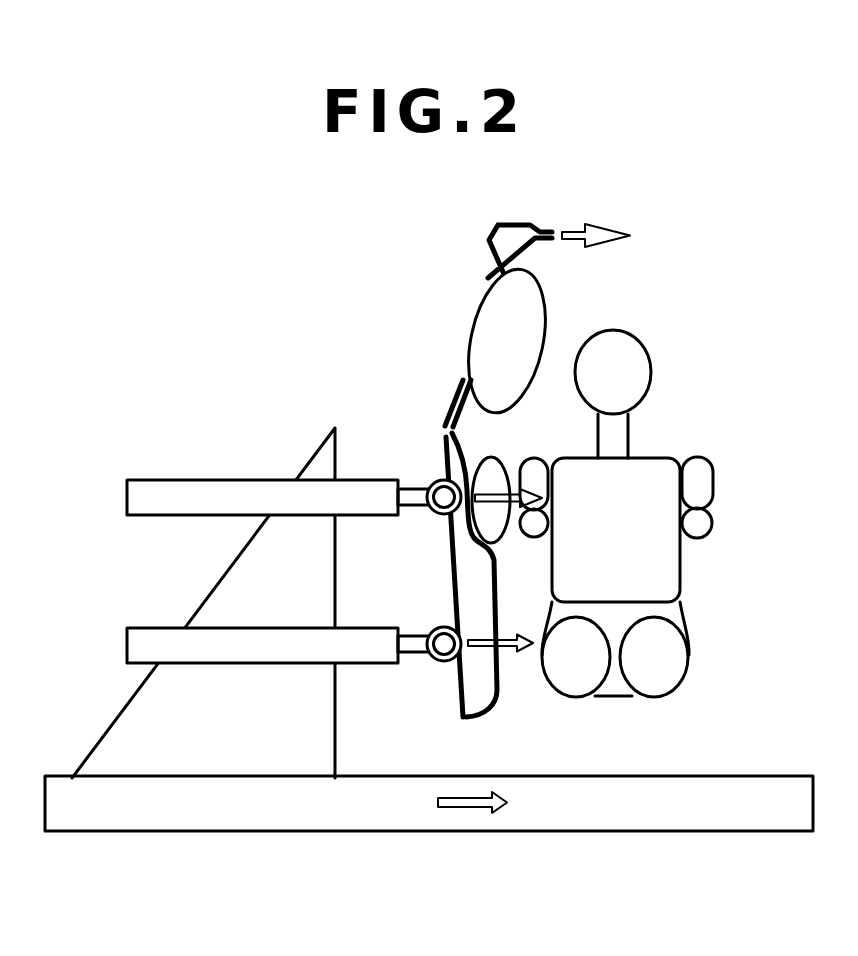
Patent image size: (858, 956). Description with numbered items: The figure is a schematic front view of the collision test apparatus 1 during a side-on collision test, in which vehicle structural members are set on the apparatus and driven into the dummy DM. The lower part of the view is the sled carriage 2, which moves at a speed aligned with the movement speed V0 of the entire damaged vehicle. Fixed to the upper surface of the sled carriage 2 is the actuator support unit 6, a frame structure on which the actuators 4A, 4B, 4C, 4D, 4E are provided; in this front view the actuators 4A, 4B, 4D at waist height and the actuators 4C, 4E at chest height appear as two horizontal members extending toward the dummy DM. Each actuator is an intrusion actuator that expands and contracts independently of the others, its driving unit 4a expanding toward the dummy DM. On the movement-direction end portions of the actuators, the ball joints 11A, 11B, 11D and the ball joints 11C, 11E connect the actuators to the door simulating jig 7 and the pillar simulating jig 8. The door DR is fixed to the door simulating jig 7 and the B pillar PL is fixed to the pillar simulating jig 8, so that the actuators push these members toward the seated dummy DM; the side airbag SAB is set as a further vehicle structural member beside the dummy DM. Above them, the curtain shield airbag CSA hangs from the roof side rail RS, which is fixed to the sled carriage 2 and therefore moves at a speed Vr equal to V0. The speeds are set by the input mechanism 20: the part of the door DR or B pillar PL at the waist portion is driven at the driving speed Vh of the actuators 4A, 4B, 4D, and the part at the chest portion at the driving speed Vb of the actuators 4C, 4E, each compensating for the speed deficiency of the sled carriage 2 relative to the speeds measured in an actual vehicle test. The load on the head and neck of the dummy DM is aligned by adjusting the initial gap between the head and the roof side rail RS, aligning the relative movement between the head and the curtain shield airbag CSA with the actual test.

The collision test apparatus 1 is at (238, 318).
The sled carriage 2 is at (720, 817).
The actuator 4A is at (262, 687).
The actuator 4B is at (262, 687).
The actuator 4D is at (220, 648).
The actuator 4C is at (262, 454).
The actuator 4E is at (168, 497).
The driving unit 4a is at (425, 506).
The actuator support unit 6 is at (106, 731).
The door simulating jig 7 is at (407, 574).
The pillar simulating jig 8 is at (445, 470).
The ball joint 11A is at (425, 699).
The ball joint 11B is at (425, 699).
The ball joint 11D is at (437, 663).
The ball joint 11C is at (400, 547).
The ball joint 11E is at (437, 517).
The input mechanism 20 is at (300, 364).
The roof side rail RS is at (496, 226).
The speed of the roof side rail Vr is at (590, 229).
The curtain shield airbag CSA is at (487, 320).
The B pillar PL is at (458, 388).
The side airbag SAB is at (488, 470).
The driving speed of the actuators 4C, 4E Vb is at (508, 490).
The driving speed of the actuators 4A, 4B, 4D Vh is at (508, 655).
The door DR is at (492, 697).
The dummy DM is at (652, 372).
The movement speed of the entire damaged vehicle V0 is at (465, 808).